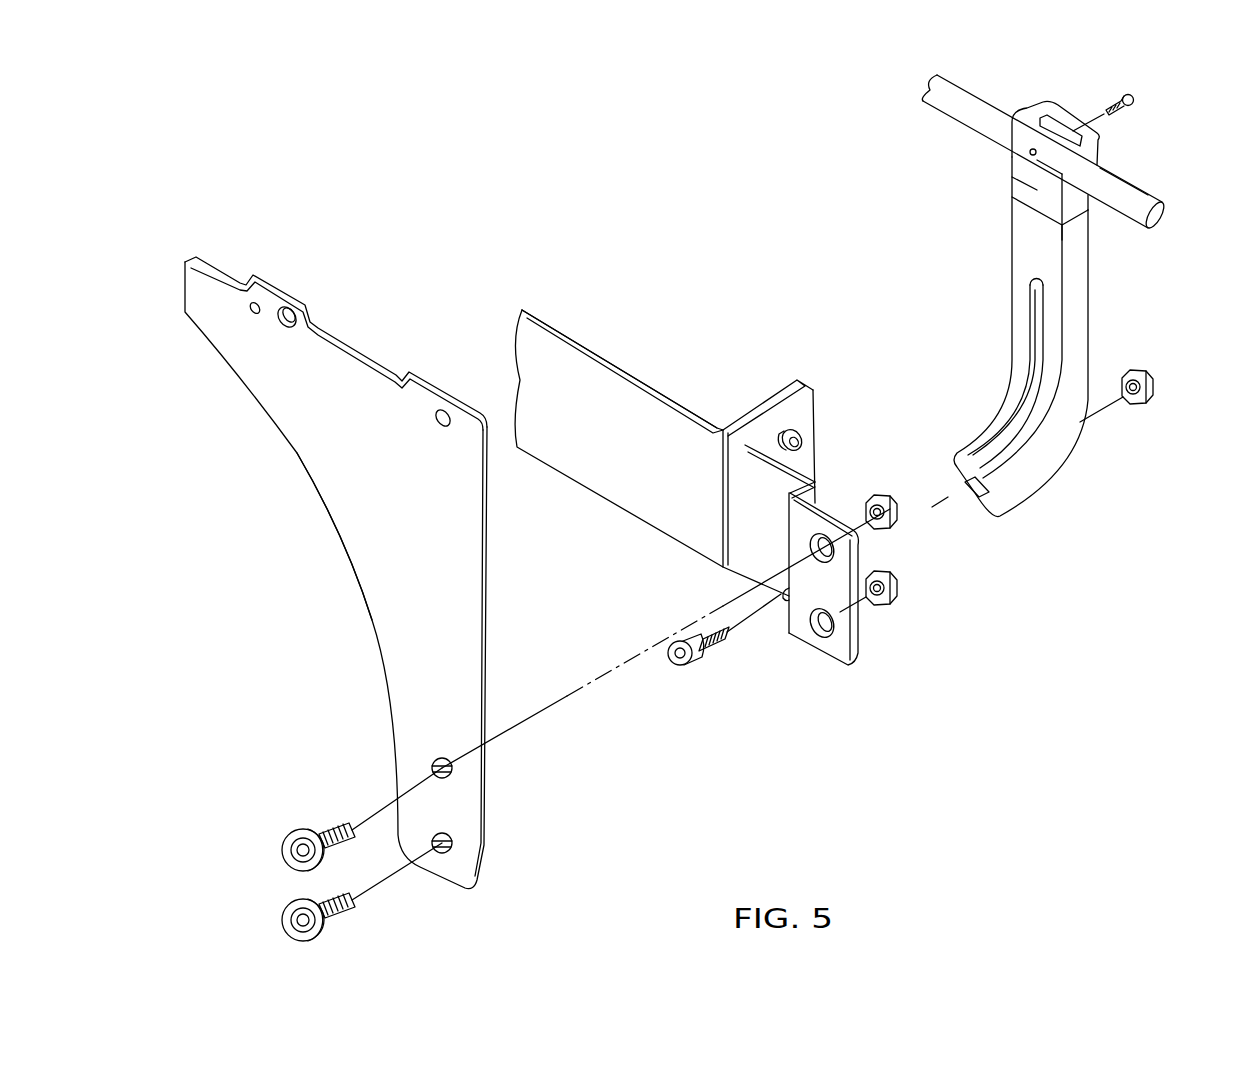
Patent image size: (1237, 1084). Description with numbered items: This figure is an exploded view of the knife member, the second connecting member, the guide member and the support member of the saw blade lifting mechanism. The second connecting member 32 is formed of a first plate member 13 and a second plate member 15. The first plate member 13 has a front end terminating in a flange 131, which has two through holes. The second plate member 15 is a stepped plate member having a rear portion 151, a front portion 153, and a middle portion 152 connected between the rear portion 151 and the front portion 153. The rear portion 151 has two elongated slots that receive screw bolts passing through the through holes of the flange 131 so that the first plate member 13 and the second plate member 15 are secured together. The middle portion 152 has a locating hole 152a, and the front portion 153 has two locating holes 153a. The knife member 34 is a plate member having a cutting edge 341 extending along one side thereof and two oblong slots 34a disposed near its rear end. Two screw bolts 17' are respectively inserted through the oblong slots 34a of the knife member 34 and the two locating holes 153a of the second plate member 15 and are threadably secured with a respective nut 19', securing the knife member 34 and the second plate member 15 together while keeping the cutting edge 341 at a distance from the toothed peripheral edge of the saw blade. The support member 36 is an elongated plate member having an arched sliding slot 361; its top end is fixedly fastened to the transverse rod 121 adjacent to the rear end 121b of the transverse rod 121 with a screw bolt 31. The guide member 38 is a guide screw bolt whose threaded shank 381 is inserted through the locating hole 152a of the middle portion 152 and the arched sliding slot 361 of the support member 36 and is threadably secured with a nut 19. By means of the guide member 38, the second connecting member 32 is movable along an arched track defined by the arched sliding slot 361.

The first plate member 13 is at (612, 488).
The flange 131 is at (764, 400).
The second plate member 15 is at (957, 312).
The rear portion 151 is at (803, 413).
The middle portion 152 is at (817, 481).
The locating hole 152a is at (780, 612).
The front portion 153 is at (860, 522).
The locating holes 153a is at (802, 610).
The screw bolts 17' is at (323, 847).
The nut 19 is at (1175, 378).
The nuts 19' is at (918, 586).
The screw bolt 31 is at (1134, 101).
The second connecting member 32 is at (551, 314).
The knife member 34 is at (370, 540).
The cutting edge 341 is at (295, 457).
The oblong slots 34a is at (452, 772).
The support member 36 is at (1090, 307).
The arched sliding slot 361 is at (1028, 437).
The guide member 38 is at (703, 660).
The threaded shank 381 is at (737, 660).
The transverse rod 121 is at (965, 97).
The rear end 121b is at (1137, 197).